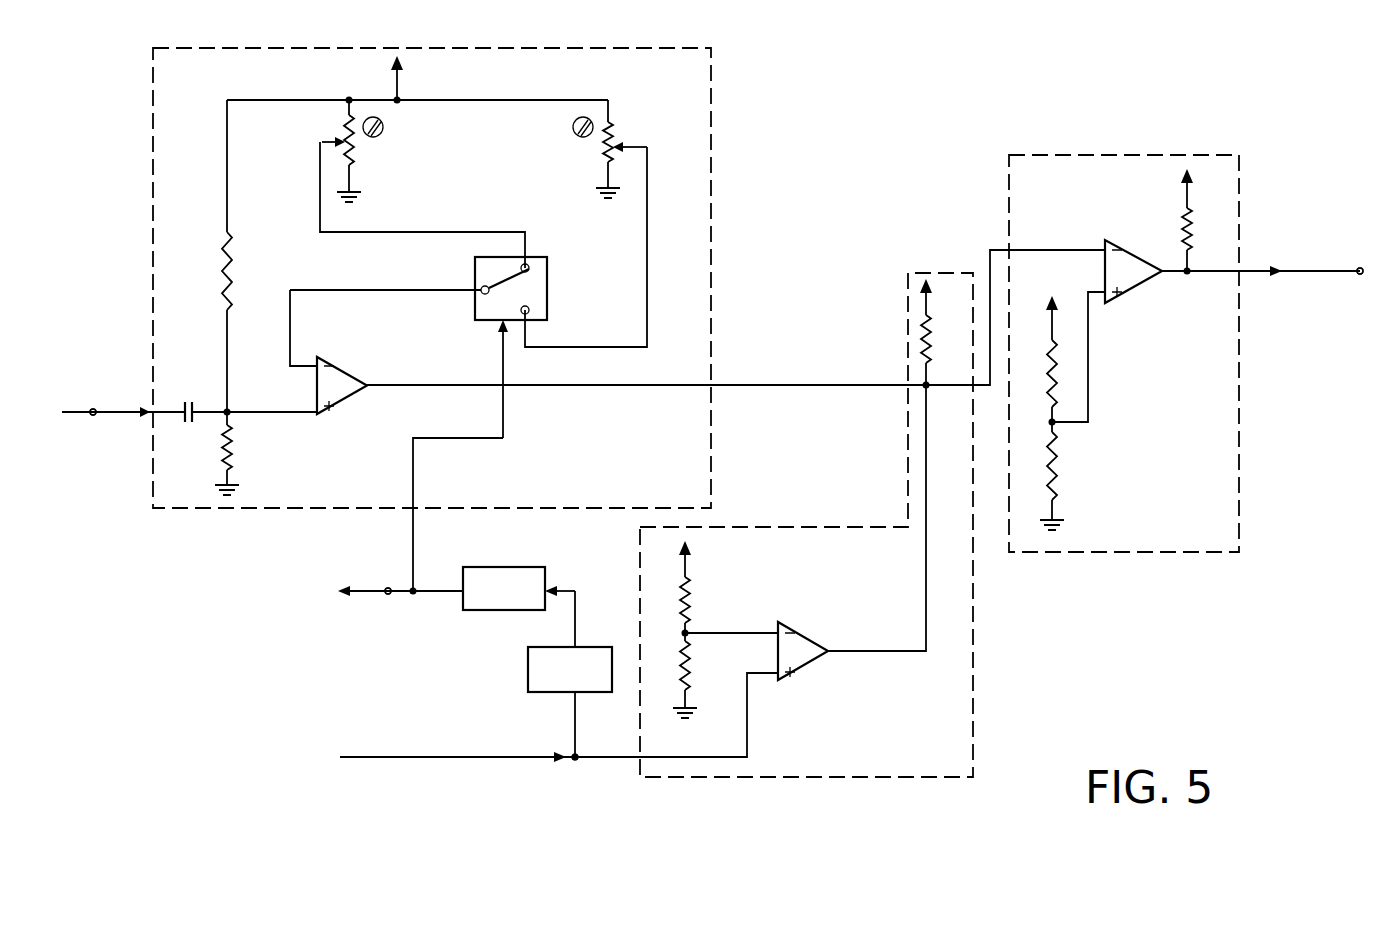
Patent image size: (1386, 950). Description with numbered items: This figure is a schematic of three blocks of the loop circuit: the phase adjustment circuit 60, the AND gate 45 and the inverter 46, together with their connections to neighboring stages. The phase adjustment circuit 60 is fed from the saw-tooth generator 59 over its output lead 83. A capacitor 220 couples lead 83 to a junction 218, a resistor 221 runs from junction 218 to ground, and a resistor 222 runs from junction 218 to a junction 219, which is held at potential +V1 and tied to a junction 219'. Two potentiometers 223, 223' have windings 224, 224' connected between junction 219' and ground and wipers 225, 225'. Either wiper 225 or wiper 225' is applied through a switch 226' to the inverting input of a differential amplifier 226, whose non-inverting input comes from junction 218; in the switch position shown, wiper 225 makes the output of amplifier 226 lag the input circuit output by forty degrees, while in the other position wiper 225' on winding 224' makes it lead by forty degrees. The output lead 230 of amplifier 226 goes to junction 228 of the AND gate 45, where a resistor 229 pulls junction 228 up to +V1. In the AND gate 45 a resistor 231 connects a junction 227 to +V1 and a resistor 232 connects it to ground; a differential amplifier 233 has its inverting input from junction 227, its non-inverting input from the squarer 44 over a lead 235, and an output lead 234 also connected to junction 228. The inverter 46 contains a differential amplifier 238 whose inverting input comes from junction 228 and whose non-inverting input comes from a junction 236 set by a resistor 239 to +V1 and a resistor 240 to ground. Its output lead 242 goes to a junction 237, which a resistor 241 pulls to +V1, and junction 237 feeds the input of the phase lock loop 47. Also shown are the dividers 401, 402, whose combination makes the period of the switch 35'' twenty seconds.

The phase adjustment circuit 60 is at (153, 227).
The output lead 83 is at (130, 406).
The saw-tooth generator 59 is at (93, 415).
The junction 218 is at (232, 408).
The junction 219 is at (417, 87).
The junction 219' is at (441, 80).
The capacitor 220 is at (210, 375).
The resistor 221 is at (236, 448).
The resistor 222 is at (224, 278).
The potentiometer 223 is at (395, 155).
The potentiometer 223' is at (589, 137).
The winding 224 is at (370, 155).
The winding 224' is at (651, 135).
The wiper 225 is at (394, 190).
The wiper 225' is at (612, 247).
The differential amplifier 226 is at (349, 352).
The switch 226' is at (449, 408).
The junction 227 is at (689, 630).
The junction 228 is at (923, 387).
The resistor 229 is at (920, 340).
The output lead 230 is at (413, 389).
The resistor 231 is at (691, 591).
The resistor 232 is at (690, 666).
The differential amplifier 233 is at (803, 631).
The output lead 234 is at (850, 652).
The lead 235 is at (437, 760).
The squarer 44 is at (424, 747).
The switch 35'' is at (266, 609).
The junction 236 is at (1056, 425).
The junction 237 is at (1188, 276).
The differential amplifier 238 is at (1136, 244).
The resistor 239 is at (1060, 364).
The resistor 240 is at (1058, 470).
The resistor 241 is at (1195, 222).
The output lead 242 is at (1165, 276).
The divider 401 is at (528, 668).
The divider 402 is at (498, 567).
The AND gate 45 is at (640, 552).
The inverter 46 is at (1122, 553).
The phase lock loop 47 is at (1372, 293).